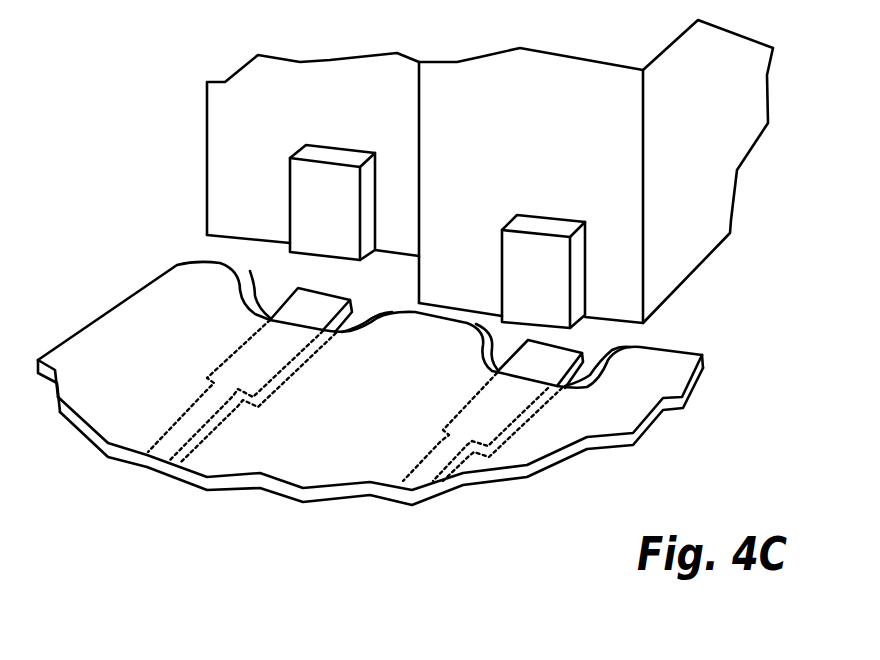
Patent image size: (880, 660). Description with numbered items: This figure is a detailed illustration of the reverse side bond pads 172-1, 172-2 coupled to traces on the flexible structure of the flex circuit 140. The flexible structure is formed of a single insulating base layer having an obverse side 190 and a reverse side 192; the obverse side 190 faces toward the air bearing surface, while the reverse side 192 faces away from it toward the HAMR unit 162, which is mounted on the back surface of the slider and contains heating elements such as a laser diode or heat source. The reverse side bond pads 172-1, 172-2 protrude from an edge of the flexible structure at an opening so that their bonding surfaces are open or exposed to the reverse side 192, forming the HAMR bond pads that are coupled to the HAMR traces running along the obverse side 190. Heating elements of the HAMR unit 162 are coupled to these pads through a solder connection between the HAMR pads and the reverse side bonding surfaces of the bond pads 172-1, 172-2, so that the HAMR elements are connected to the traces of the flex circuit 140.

The HAMR unit 162 is at (536, 168).
The reverse side bond pad 172-1 is at (320, 298).
The reverse side bond pad 172-2 is at (570, 346).
The obverse side 190 is at (350, 500).
The reverse side 192 is at (400, 419).
The flex circuit 140 is at (455, 507).